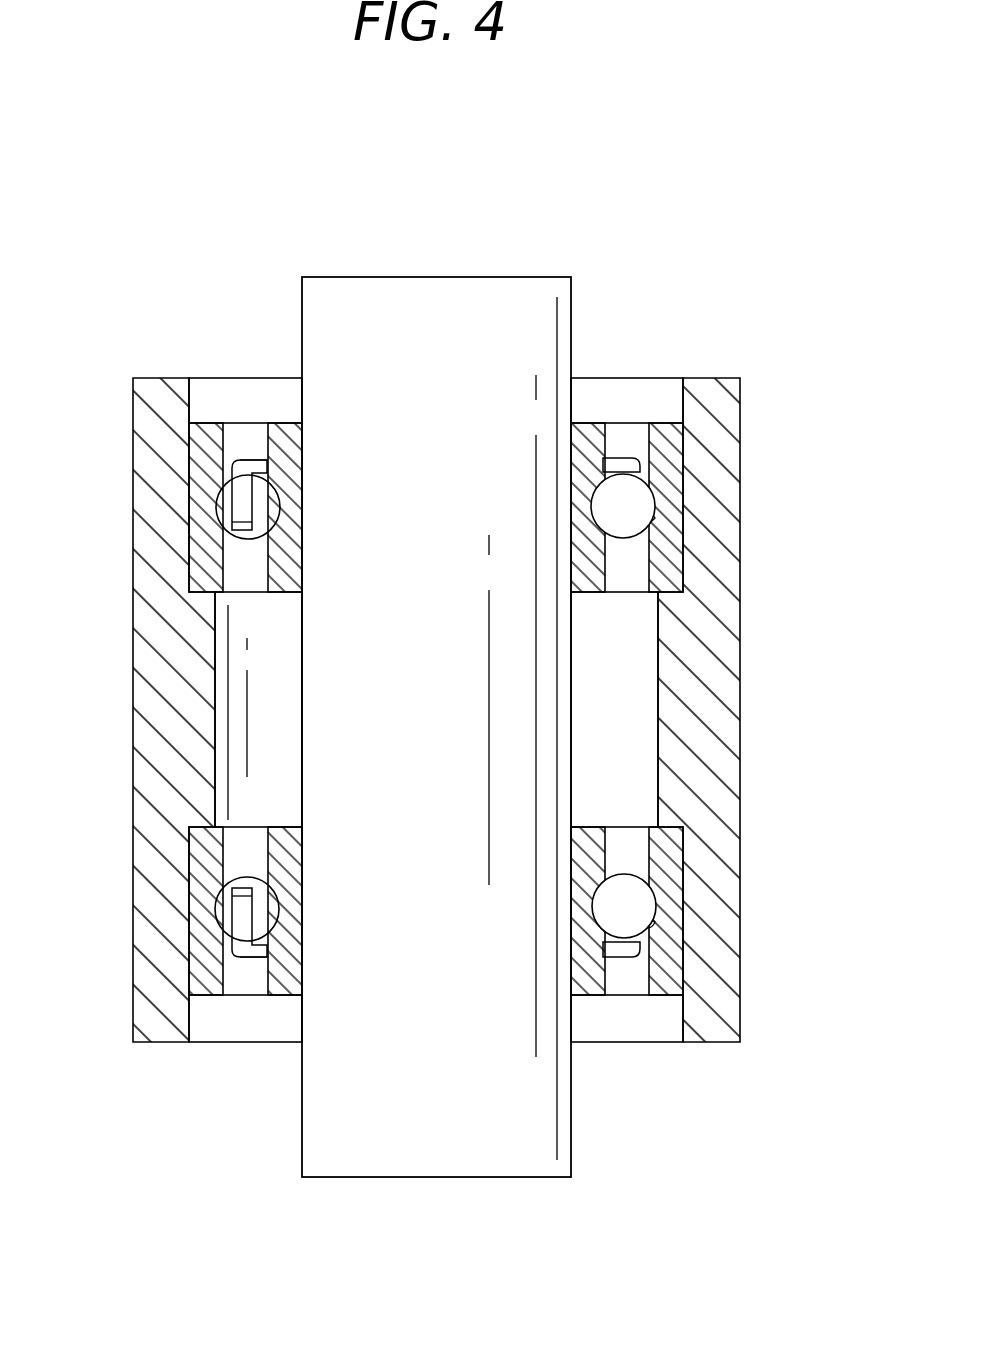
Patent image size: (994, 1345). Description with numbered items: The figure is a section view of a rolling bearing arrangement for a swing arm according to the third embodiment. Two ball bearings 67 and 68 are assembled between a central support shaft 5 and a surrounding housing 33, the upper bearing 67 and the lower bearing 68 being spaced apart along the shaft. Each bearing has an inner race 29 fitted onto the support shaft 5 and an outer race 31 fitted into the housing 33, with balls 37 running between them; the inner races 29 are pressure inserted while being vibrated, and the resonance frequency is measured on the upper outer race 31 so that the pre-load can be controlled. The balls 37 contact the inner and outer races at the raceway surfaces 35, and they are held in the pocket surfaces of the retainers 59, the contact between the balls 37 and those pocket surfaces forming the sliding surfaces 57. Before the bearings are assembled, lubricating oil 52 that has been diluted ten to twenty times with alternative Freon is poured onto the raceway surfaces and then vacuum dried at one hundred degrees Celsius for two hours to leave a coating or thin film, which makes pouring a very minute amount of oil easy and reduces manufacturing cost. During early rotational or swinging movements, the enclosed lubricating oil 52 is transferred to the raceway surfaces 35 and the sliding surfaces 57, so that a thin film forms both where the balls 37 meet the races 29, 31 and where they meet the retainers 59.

The support shaft 5 is at (395, 1180).
The inner race 29 is at (280, 430).
The outer race 31 is at (207, 428).
The housing 33 is at (725, 415).
The raceway surface 35 is at (650, 516).
The ball 37 is at (637, 497).
The lubricating oil 52 is at (225, 508).
The sliding surface 57 is at (234, 522).
The retainer 59 is at (237, 462).
The ball bearing 67 is at (737, 348).
The ball bearing 68 is at (682, 1053).